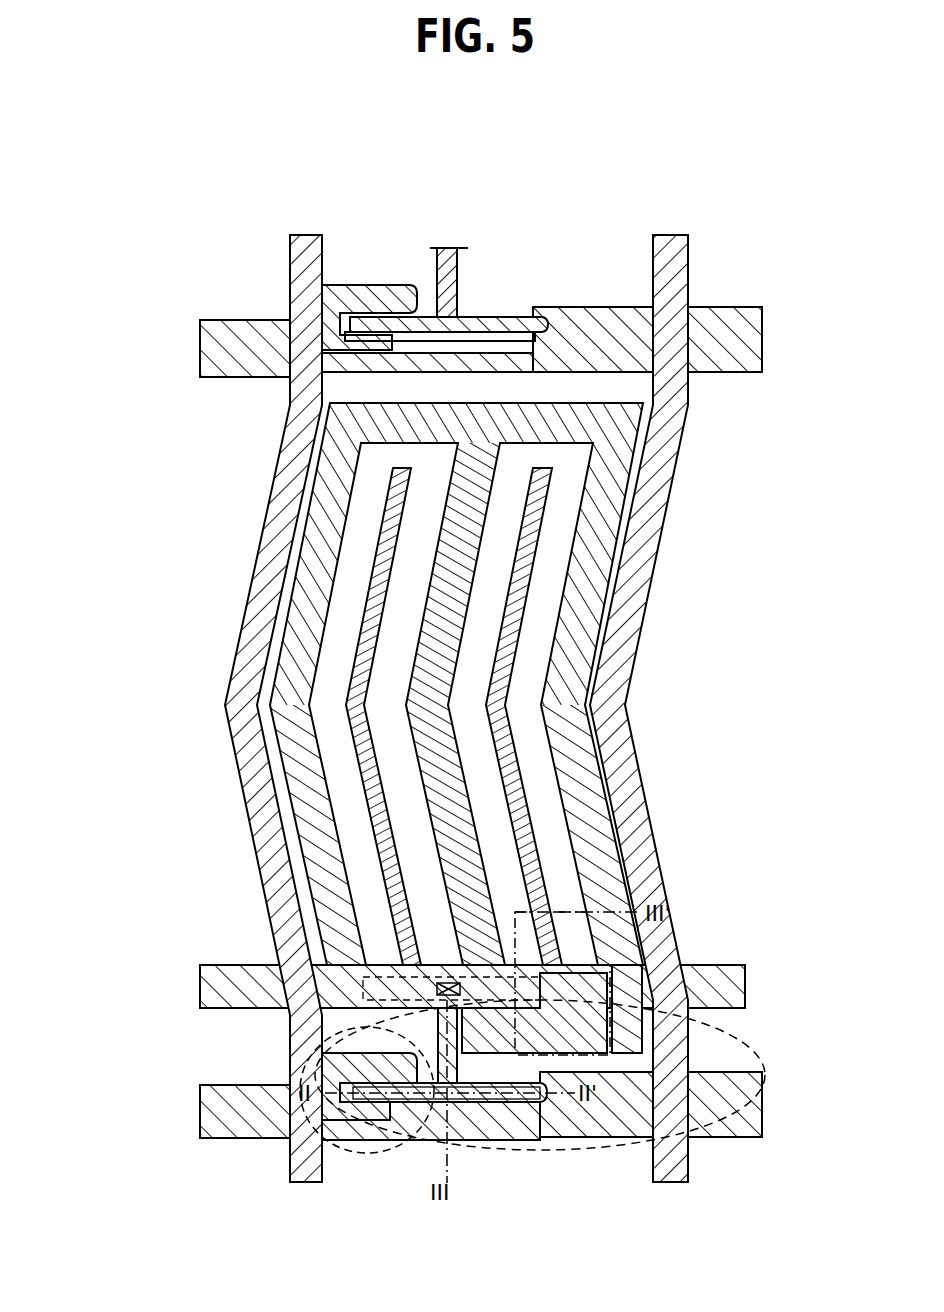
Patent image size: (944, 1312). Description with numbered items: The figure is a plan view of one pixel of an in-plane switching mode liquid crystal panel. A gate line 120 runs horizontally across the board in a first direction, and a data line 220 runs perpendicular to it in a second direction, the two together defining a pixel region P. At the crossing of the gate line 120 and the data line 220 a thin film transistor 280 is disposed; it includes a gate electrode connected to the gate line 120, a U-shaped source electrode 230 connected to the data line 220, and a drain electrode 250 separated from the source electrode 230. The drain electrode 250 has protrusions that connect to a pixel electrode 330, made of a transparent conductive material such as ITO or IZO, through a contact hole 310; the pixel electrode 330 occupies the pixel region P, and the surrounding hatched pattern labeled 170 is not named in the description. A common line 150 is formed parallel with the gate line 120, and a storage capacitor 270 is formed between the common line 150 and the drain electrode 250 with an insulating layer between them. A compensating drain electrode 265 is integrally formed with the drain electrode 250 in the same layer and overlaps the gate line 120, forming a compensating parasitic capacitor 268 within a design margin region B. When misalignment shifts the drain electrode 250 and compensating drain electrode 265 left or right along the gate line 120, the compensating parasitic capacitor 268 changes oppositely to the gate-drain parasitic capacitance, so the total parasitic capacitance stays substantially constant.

The gate line 120 is at (200, 1117).
The common line 150 is at (745, 987).
The common electrode 170 is at (590, 738).
The data line 220 is at (245, 772).
The U-shaped source electrode 230 is at (353, 1117).
The drain electrode 250 is at (414, 1140).
The compensating drain electrode 265 is at (483, 1110).
The compensating parasitic capacitor C"gd 268 is at (552, 1140).
The storage capacitor Cst 270 is at (612, 992).
The thin film transistor 280 is at (372, 1160).
The contact hole 310 is at (368, 1004).
The pixel electrode 330 is at (528, 580).
The pixel region P is at (700, 506).
The design margin region B is at (726, 1056).